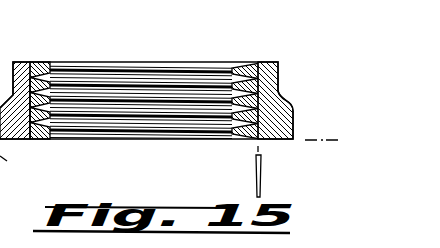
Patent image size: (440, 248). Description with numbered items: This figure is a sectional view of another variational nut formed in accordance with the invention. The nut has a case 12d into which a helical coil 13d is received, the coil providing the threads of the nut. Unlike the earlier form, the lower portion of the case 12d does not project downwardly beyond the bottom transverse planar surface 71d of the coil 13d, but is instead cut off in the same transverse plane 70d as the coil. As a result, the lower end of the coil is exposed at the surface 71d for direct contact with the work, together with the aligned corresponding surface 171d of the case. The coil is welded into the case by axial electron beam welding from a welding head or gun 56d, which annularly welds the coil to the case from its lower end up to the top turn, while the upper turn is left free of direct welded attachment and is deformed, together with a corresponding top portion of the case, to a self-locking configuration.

The coil 13d is at (177, 82).
The case 12d is at (18, 140).
The bottom transverse planar surface of coil 71d is at (47, 140).
The welding head or gun 56d is at (256, 170).
The transverse plane 70d is at (315, 140).
The corresponding surface of case 171d is at (282, 140).